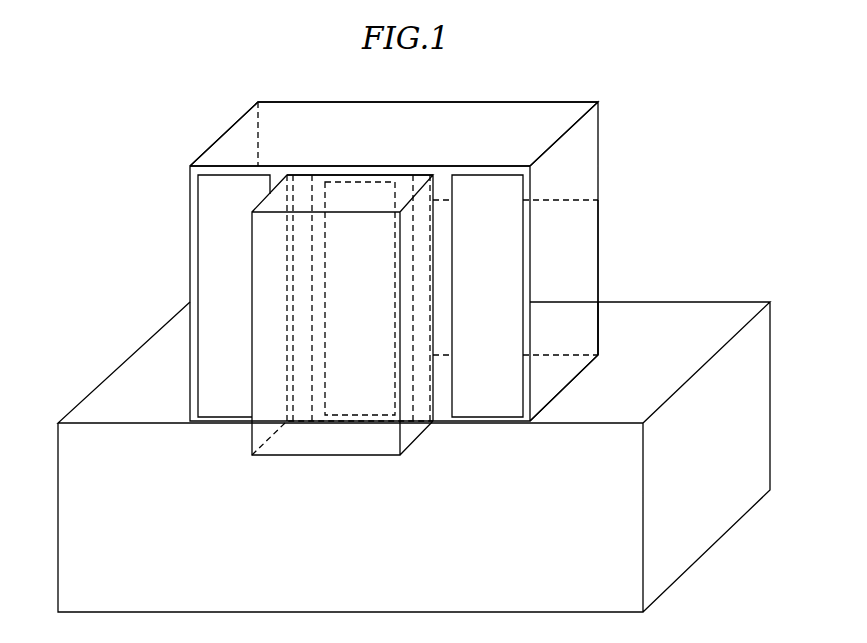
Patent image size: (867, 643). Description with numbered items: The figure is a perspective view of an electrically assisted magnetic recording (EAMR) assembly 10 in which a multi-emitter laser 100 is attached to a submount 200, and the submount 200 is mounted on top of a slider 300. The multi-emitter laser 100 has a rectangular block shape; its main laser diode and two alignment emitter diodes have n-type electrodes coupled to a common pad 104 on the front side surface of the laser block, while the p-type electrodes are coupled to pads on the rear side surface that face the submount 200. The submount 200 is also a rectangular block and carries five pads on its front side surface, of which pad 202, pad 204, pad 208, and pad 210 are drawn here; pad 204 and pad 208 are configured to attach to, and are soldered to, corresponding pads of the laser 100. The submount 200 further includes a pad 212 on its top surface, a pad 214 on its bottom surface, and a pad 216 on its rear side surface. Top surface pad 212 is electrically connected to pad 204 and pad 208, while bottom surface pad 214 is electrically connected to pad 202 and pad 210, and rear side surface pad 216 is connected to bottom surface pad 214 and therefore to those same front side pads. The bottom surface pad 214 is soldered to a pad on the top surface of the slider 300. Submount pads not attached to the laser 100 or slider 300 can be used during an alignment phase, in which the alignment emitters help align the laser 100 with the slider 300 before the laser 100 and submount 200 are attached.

The electrically assisted magnetic recording (EAMR) assembly 10 is at (686, 58).
The multi-emitter laser 100 is at (263, 202).
The common pad 104 is at (270, 277).
The submount 200 is at (598, 140).
The pad 202 is at (228, 183).
The pad 204 is at (293, 176).
The pad 208 is at (423, 170).
The pad 210 is at (492, 190).
The pad 212 is at (427, 110).
The pad 214 is at (578, 377).
The pad 216 is at (598, 237).
The slider 300 is at (775, 311).